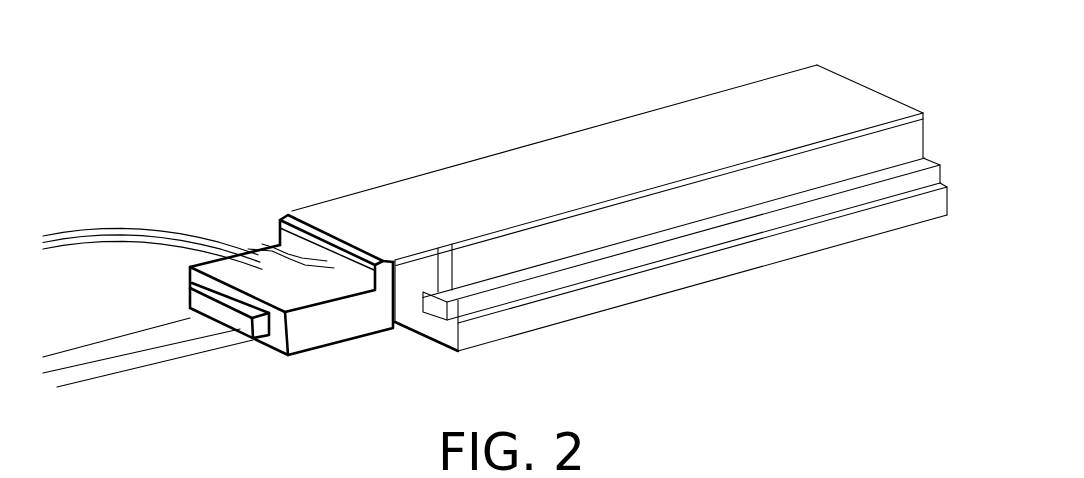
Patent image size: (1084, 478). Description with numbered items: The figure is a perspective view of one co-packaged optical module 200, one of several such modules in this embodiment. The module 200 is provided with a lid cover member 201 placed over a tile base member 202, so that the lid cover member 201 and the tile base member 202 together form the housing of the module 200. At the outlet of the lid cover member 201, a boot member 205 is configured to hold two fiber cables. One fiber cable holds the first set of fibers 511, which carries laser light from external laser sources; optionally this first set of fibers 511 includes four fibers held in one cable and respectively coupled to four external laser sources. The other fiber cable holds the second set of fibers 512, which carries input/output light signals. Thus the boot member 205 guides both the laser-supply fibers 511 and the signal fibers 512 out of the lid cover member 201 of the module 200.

The co-packaged optical module 200 is at (309, 38).
The lid cover member 201 is at (527, 168).
The tile base member 202 is at (640, 280).
The boot member 205 is at (263, 247).
The first set of fibers 511 is at (157, 232).
The second set of fibers 512 is at (173, 328).